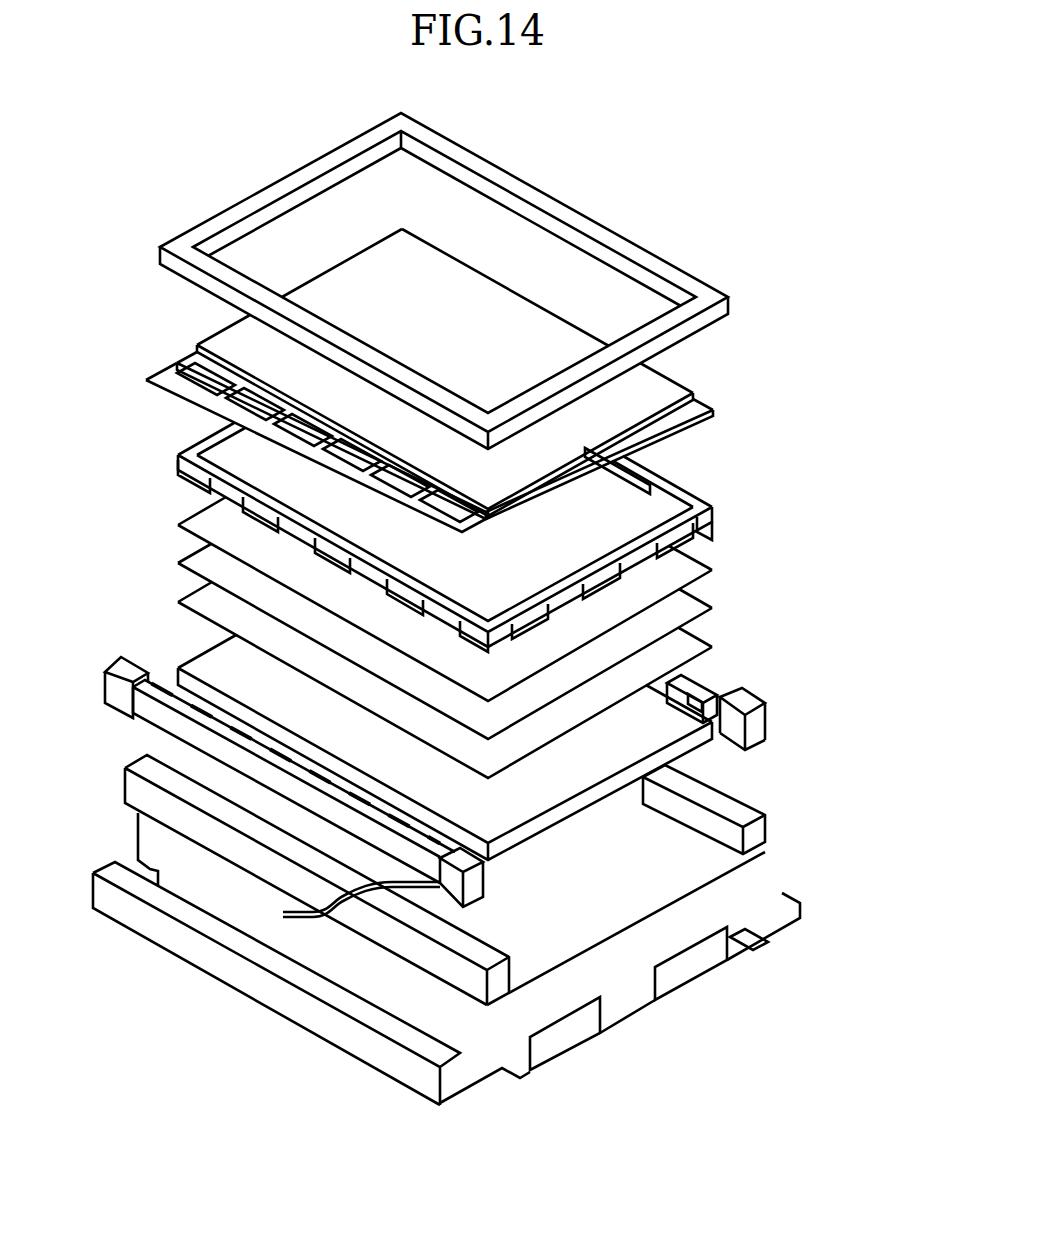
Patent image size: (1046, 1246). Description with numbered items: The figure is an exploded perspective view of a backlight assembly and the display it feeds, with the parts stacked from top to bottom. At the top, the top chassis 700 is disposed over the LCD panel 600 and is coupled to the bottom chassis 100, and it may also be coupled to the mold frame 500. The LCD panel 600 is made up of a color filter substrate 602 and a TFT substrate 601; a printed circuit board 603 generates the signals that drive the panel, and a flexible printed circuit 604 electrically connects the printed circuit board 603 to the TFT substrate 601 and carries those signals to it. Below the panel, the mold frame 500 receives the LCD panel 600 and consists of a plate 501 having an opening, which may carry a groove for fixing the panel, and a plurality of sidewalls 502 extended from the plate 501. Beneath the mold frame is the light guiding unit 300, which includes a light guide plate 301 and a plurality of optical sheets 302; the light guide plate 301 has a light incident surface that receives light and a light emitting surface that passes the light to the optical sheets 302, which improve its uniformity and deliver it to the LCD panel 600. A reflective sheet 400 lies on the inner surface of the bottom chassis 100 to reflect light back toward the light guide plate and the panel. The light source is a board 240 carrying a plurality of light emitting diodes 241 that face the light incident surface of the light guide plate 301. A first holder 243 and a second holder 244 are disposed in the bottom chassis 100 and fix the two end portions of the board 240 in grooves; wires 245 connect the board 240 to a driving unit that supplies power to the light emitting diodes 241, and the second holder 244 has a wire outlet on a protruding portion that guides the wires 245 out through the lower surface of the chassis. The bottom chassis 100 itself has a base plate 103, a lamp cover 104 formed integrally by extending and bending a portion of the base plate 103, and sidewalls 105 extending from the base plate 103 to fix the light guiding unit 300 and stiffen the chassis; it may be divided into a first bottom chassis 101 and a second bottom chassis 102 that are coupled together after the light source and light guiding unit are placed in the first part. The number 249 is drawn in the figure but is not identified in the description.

The top chassis 700 is at (684, 285).
The LCD panel 600 is at (499, 380).
The color filter substrate 602 is at (670, 385).
The thin film transistor substrate 601 is at (697, 410).
The flexible printed circuit 604 is at (470, 493).
The printed circuit board 603 is at (617, 467).
The mold frame 500 is at (515, 537).
The plate 501 is at (708, 505).
The sidewalls 502 is at (705, 521).
The light guiding unit 300 is at (515, 637).
The optical sheets 302 is at (688, 647).
The light guide plate 301 is at (712, 692).
The reflective sheet 400 is at (745, 847).
The board 240 is at (314, 861).
The light emitting diodes 241 is at (333, 780).
The first holder 243 is at (115, 698).
The second holder 244 is at (484, 884).
The wires 245 is at (418, 848).
The connection wires 249 is at (438, 886).
The bottom chassis 100 is at (501, 959).
The first bottom chassis 101 is at (700, 986).
The second bottom chassis 102 is at (618, 1031).
The base plate 103 is at (791, 934).
The lamp cover 104 is at (427, 1085).
The sidewalls 105 is at (705, 957).